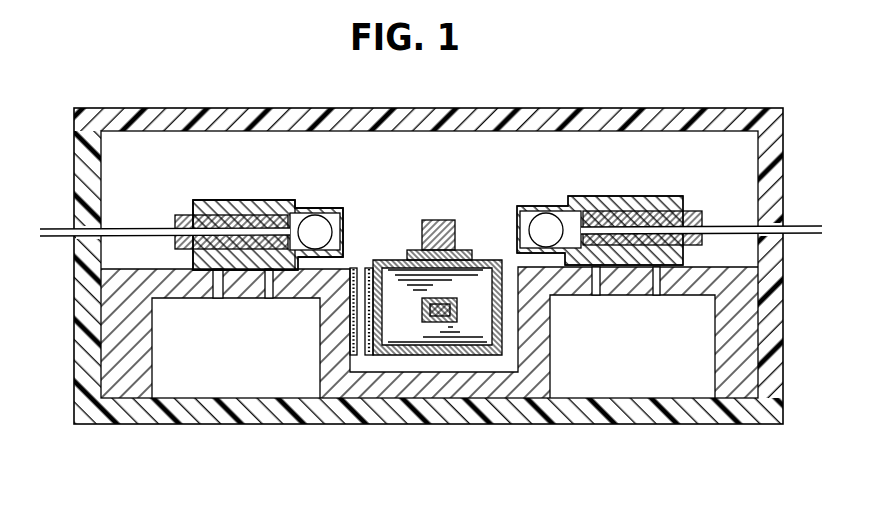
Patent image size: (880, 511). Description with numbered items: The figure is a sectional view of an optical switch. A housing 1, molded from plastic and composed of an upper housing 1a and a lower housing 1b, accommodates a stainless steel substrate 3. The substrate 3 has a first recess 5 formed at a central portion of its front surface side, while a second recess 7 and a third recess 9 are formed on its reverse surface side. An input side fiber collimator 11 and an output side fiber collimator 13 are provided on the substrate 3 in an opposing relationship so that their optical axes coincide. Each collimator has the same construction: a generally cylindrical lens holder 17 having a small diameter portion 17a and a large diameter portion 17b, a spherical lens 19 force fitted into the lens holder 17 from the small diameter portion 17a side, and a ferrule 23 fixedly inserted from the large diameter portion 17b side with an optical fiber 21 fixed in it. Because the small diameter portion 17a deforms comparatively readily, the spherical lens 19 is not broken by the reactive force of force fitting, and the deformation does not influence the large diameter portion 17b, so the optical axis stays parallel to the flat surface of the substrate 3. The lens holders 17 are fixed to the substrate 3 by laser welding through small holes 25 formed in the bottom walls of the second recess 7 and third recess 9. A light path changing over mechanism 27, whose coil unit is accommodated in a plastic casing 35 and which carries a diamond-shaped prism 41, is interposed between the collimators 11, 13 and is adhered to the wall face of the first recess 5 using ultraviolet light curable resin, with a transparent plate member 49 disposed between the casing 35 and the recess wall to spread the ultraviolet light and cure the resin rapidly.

The housing 1 is at (460, 265).
The upper housing 1a is at (726, 107).
The lower housing 1b is at (750, 414).
The substrate 3 is at (483, 400).
The first recess 5 is at (518, 378).
The second recess 7 is at (153, 368).
The third recess 9 is at (714, 368).
The input side fiber collimator 11 is at (229, 195).
The output side fiber collimator 13 is at (620, 190).
The lens holder 17 is at (206, 198).
The small diameter portion 17a is at (319, 208).
The large diameter portion 17b is at (262, 199).
The spherical lens 19 is at (334, 229).
The optical fiber 21 is at (58, 228).
The ferrule 23 is at (174, 216).
The small holes 25 is at (267, 298).
The light path changing over mechanism 27 is at (447, 208).
The casing 35 is at (424, 358).
The diamond-shaped prism 41 is at (428, 221).
The transparent plate member 49 is at (350, 323).